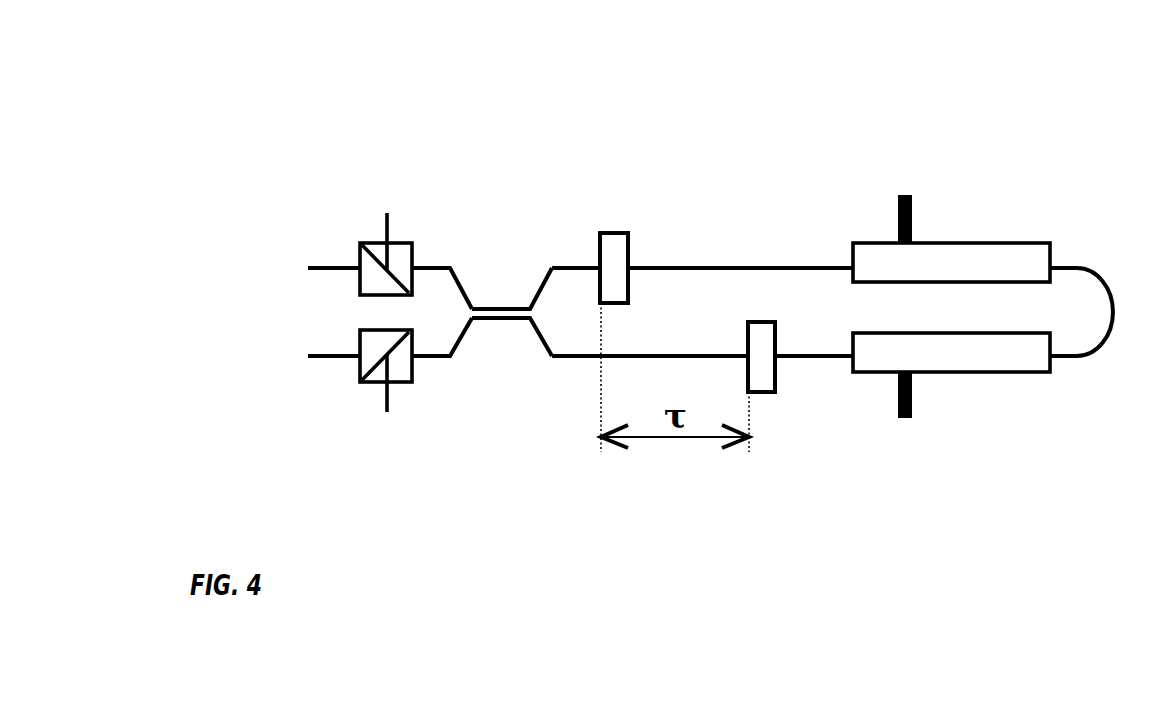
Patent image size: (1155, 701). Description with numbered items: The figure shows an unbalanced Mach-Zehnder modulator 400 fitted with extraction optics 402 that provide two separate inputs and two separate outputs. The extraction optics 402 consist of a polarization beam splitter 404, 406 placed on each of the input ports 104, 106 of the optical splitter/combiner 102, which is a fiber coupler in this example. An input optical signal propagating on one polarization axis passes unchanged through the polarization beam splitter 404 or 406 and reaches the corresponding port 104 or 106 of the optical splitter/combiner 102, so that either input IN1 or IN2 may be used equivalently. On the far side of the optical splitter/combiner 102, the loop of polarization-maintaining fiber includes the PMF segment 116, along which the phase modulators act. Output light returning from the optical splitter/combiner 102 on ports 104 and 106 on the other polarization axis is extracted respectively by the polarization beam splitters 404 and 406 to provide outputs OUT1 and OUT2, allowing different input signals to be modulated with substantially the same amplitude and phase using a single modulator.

The unbalanced Mach-Zehnder modulator 400 is at (1022, 180).
The extraction optics 402 is at (358, 140).
The polarization beam splitter 404 is at (358, 251).
The polarization beam splitter 406 is at (358, 370).
The optical splitter/combiner 102 is at (498, 308).
The first port 104 is at (451, 268).
The second port 106 is at (453, 357).
The PMF segment 116 is at (644, 357).